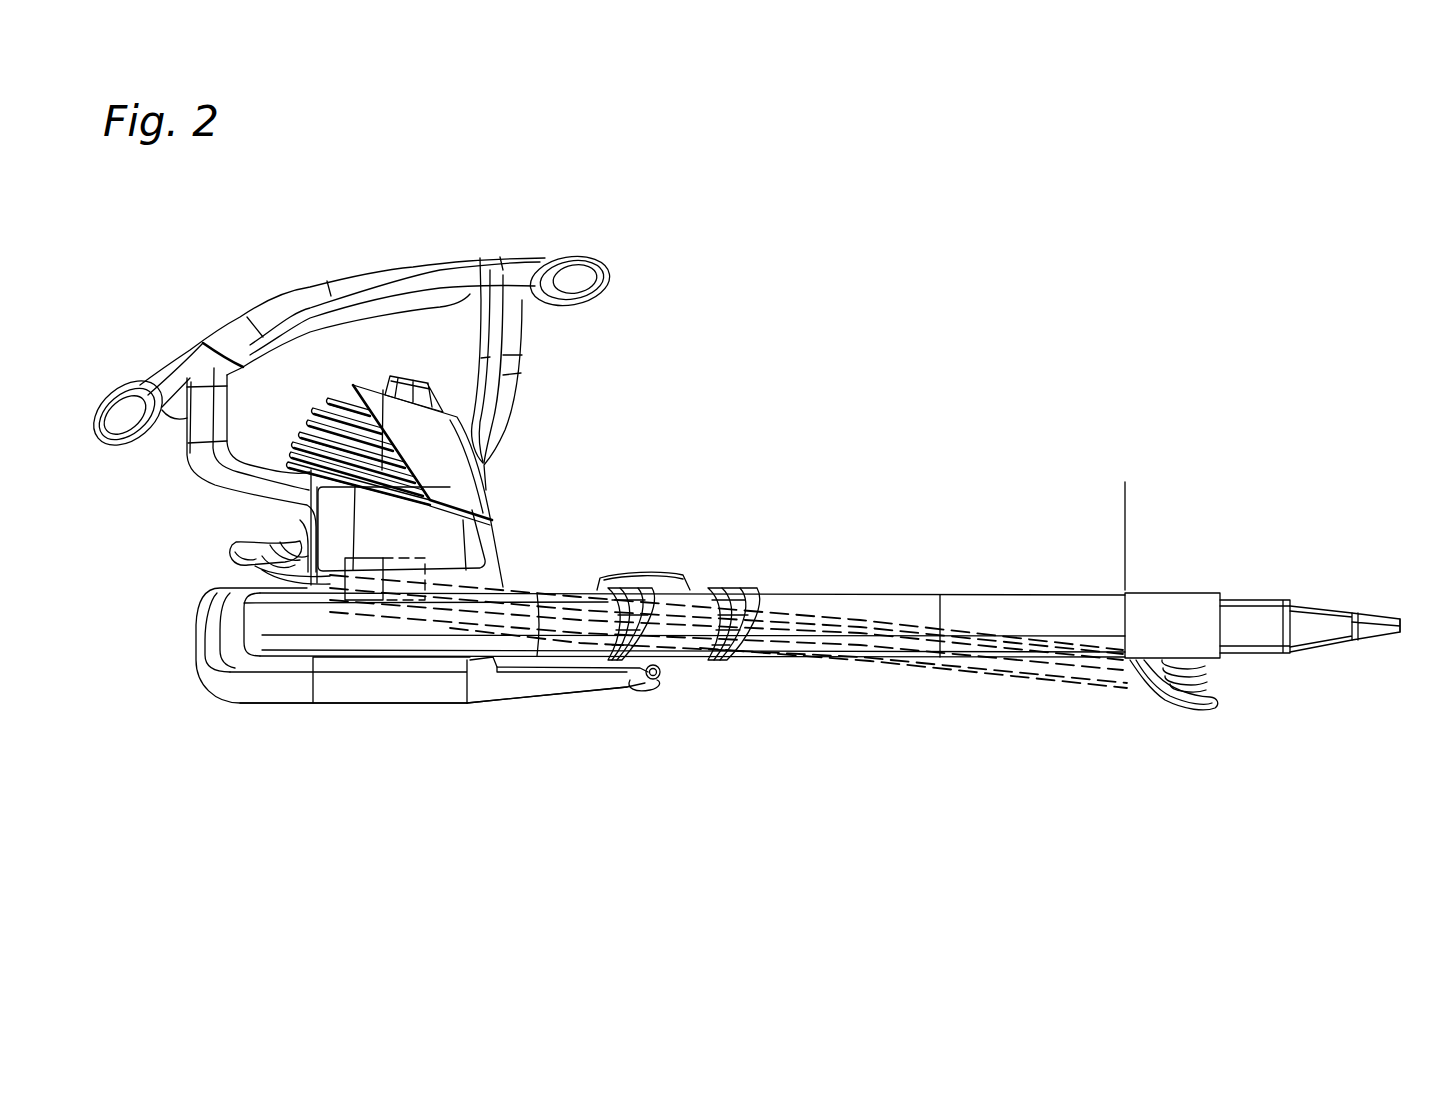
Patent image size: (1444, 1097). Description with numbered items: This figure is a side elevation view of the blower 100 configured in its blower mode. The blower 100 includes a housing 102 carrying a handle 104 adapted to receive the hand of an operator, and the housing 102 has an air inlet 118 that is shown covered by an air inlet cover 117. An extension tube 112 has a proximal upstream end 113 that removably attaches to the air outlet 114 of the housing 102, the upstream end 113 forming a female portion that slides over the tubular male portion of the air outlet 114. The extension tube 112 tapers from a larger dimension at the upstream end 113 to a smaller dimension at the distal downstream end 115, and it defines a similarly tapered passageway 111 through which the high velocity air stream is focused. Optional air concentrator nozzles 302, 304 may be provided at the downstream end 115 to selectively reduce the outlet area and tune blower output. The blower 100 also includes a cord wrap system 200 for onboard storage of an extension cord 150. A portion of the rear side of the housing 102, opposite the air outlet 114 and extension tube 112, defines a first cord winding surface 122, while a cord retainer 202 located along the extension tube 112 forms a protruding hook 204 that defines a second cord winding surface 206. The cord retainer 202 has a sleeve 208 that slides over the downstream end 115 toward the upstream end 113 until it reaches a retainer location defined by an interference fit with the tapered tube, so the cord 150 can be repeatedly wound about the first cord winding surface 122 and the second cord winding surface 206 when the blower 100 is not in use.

The blower 100 is at (705, 320).
The housing 102 is at (215, 675).
The handle 104 is at (393, 270).
The passageway 111 is at (1401, 628).
The extension tube 112 is at (1020, 593).
The upstream end 113 is at (737, 650).
The air outlet 114 is at (790, 613).
The downstream end 115 is at (1290, 605).
The air inlet cover 117 is at (493, 707).
The air inlet 118 is at (357, 707).
The first cord winding surface 122 is at (230, 543).
The extension cord 150 is at (959, 668).
The cord wrap system 200 is at (1120, 728).
The cord retainer 202 is at (1210, 593).
The hook 204 is at (1207, 717).
The second cord winding surface 206 is at (1217, 687).
The sleeve 208 is at (1153, 593).
The air concentrator nozzle 302 is at (1320, 643).
The air concentrator nozzle 304 is at (1382, 643).